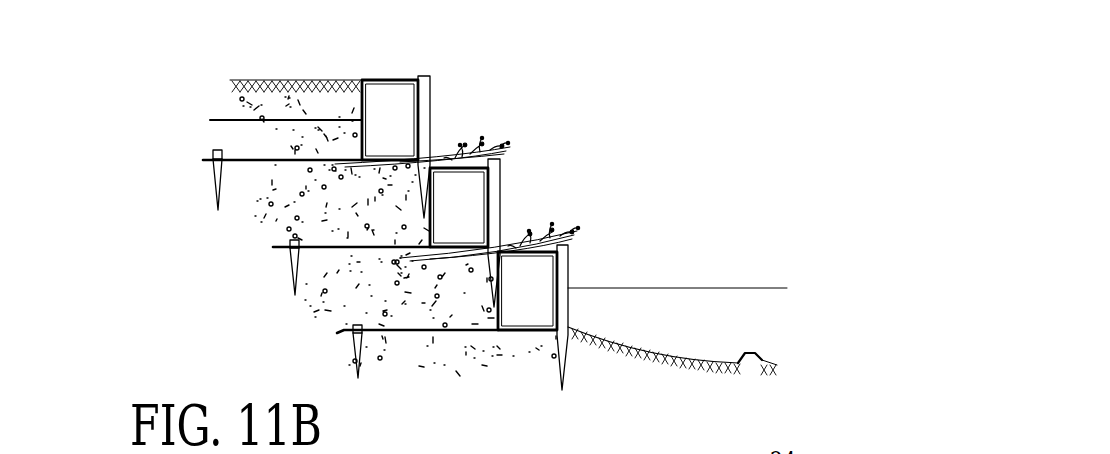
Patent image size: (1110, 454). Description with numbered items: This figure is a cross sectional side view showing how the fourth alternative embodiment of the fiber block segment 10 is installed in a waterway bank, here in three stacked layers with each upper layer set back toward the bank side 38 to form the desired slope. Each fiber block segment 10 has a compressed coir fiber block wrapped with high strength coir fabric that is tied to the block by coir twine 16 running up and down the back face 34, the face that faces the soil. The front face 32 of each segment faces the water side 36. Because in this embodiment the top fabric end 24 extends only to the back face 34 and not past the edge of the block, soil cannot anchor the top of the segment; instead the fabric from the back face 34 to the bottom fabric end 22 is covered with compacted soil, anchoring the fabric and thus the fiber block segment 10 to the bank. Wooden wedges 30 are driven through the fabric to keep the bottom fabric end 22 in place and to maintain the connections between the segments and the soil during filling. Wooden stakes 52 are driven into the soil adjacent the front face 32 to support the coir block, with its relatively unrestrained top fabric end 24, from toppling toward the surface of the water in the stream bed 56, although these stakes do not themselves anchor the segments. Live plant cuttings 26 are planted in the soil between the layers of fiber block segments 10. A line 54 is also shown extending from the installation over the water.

The fiber block segment 10 is at (459, 172).
The coir twine 16 is at (272, 120).
The bottom fabric end 22 is at (352, 331).
The top fabric end 24 is at (358, 80).
The live plant cuttings 26 is at (502, 143).
The wooden wedges 30 is at (222, 184).
The front face 32 is at (599, 324).
The back face 34 is at (476, 311).
The water side 36 is at (595, 368).
The bank side 38 is at (462, 335).
The wooden stakes 52 is at (498, 202).
The level line 54 is at (752, 288).
The stream bed 56 is at (755, 353).